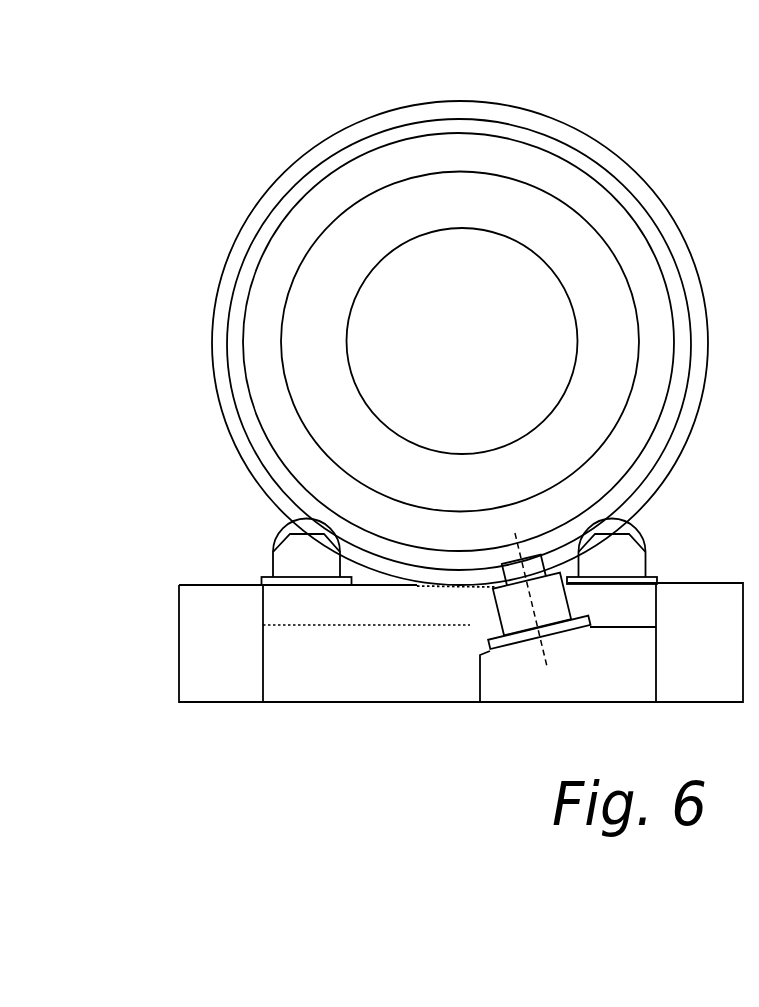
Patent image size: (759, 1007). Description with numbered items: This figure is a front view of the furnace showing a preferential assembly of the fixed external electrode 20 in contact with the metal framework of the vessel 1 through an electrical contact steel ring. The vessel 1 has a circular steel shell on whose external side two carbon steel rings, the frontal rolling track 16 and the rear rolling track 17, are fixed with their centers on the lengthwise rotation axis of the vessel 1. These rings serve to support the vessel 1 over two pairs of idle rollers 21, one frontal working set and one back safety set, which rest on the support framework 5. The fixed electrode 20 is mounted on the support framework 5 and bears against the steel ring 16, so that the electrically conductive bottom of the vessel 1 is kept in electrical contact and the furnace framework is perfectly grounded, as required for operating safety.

The vessel 1 is at (332, 200).
The steel ring, frontal rolling track 16 is at (512, 123).
The steel ring, rear rolling track 17 is at (395, 109).
The support framework 5 is at (178, 630).
The fixed electrode 20 is at (510, 610).
The idle rollers 21 is at (285, 527).